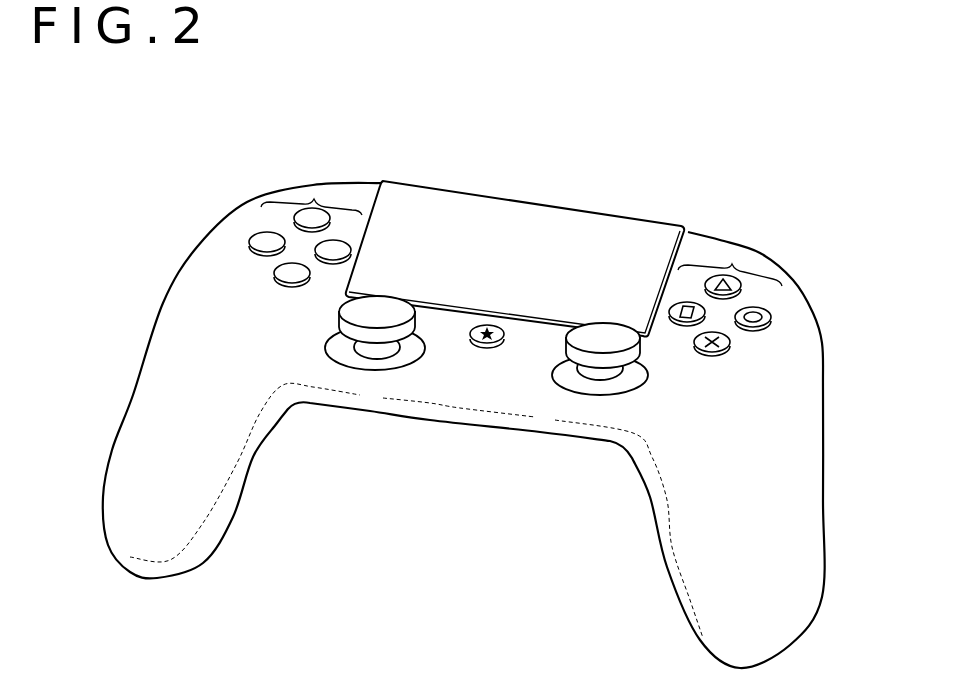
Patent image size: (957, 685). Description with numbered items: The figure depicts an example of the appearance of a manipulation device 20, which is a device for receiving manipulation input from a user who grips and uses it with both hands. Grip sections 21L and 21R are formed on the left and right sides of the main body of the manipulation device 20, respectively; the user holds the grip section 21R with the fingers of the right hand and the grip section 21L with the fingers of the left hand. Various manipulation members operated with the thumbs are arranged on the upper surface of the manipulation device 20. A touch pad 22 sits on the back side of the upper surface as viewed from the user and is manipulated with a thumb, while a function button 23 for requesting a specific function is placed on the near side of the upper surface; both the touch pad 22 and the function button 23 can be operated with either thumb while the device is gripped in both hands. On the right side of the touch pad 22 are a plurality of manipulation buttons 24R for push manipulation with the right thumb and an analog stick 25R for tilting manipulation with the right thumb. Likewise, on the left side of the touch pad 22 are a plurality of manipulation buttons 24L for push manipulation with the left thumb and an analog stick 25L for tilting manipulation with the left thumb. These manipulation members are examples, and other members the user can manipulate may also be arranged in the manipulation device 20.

The manipulation device 20 is at (397, 518).
The grip section 21L is at (120, 462).
The grip section 21R is at (810, 550).
The touch pad 22 is at (527, 223).
The function button 23 is at (477, 350).
The manipulation buttons 24L is at (318, 197).
The manipulation buttons 24R is at (726, 267).
The analog stick 25L is at (383, 313).
The analog stick 25R is at (603, 348).